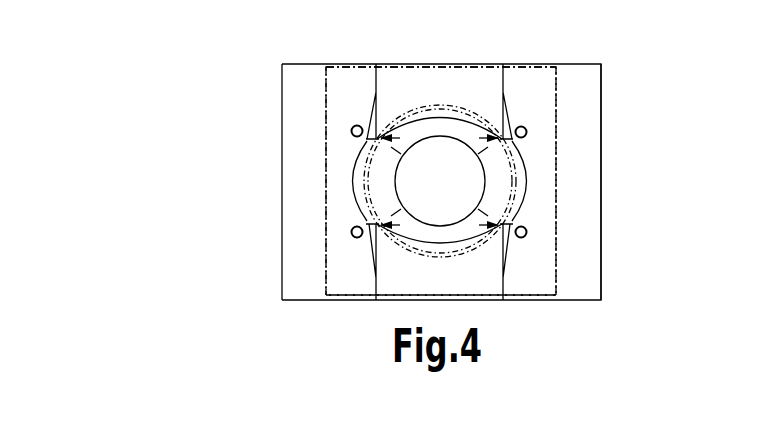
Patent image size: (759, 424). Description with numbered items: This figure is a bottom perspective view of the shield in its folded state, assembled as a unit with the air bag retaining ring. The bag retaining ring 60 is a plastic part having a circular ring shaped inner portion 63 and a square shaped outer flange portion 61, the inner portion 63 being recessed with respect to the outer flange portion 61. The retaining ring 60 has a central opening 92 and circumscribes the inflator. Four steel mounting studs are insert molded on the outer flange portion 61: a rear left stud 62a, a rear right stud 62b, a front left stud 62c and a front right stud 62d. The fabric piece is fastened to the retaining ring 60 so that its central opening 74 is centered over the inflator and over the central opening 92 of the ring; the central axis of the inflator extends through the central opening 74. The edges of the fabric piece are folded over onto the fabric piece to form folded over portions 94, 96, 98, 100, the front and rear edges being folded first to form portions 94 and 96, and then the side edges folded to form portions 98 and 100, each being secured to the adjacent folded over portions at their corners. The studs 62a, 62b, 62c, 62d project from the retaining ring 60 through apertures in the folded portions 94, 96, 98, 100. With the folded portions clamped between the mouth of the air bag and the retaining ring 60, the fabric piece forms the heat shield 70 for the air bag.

The bag retaining ring 60 is at (557, 191).
The outer flange portion 61 is at (556, 218).
The rear left stud 62a is at (355, 126).
The rear right stud 62b is at (524, 127).
The front left stud 62c is at (354, 237).
The front right stud 62d is at (525, 236).
The inner portion 63 is at (365, 177).
The heat shield 70 is at (604, 86).
The central opening 74 is at (427, 189).
The central opening 92 is at (493, 177).
The folded over portion 94 is at (488, 292).
The folded over portion 96 is at (493, 67).
The folded over portion 98 is at (585, 252).
The folded over portion 100 is at (302, 121).